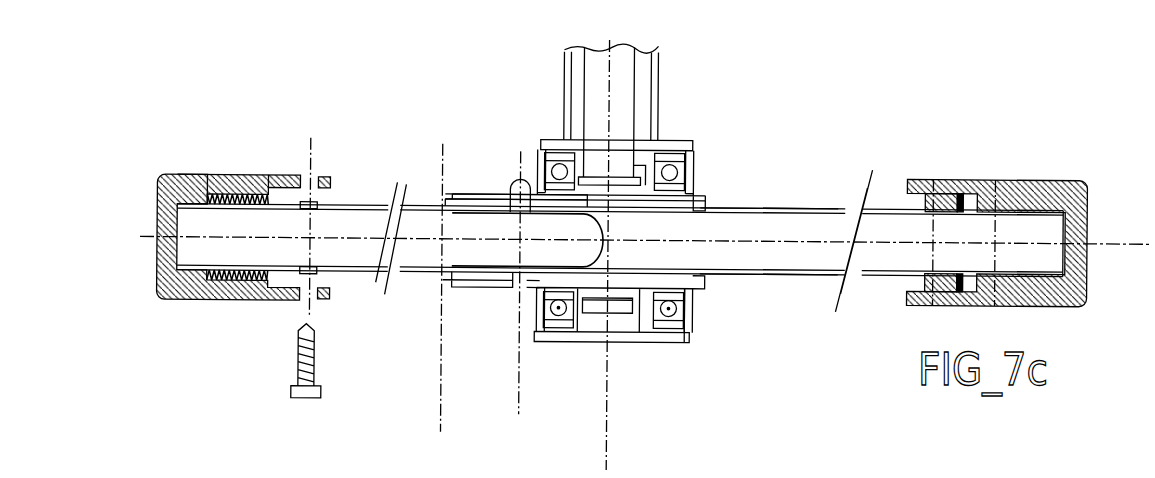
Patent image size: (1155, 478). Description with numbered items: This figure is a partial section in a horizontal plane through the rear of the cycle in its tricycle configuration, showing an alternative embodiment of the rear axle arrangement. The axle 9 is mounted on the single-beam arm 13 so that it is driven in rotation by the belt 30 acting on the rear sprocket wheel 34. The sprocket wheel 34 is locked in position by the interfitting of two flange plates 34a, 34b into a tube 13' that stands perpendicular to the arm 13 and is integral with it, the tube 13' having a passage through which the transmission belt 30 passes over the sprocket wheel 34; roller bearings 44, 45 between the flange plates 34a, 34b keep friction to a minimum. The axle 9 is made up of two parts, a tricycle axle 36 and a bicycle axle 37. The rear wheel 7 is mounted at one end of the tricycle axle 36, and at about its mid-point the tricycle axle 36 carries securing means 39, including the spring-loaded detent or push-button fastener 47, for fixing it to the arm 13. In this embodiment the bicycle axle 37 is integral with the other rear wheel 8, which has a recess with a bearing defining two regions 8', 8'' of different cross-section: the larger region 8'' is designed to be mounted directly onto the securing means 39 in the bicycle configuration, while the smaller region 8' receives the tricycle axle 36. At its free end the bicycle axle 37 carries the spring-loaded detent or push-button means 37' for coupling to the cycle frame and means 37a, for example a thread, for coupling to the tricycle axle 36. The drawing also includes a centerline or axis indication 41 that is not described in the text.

The rear wheel 7 is at (1088, 208).
The rear wheel 8 is at (228, 225).
The smaller cross-section region 8' is at (190, 137).
The larger cross-section region 8'' is at (269, 128).
The axle 9 is at (739, 306).
The arm 13 is at (596, 131).
The tube 13' is at (644, 121).
The belt 30 is at (620, 77).
The rear sprocket wheel 34 is at (616, 352).
The flange plate 34a is at (537, 335).
The flange plate 34b is at (688, 332).
The tricycle axle 36 is at (822, 278).
The bicycle axle 37 is at (262, 331).
The spring-loaded detent or push-button means 37' is at (308, 182).
The thread coupling means 37a is at (258, 302).
The securing means 39 is at (497, 254).
The axis line 41 is at (442, 420).
The roller bearing 44 is at (560, 310).
The roller bearing 45 is at (670, 310).
The spring-loaded detent or push-button fastener 47 is at (510, 186).